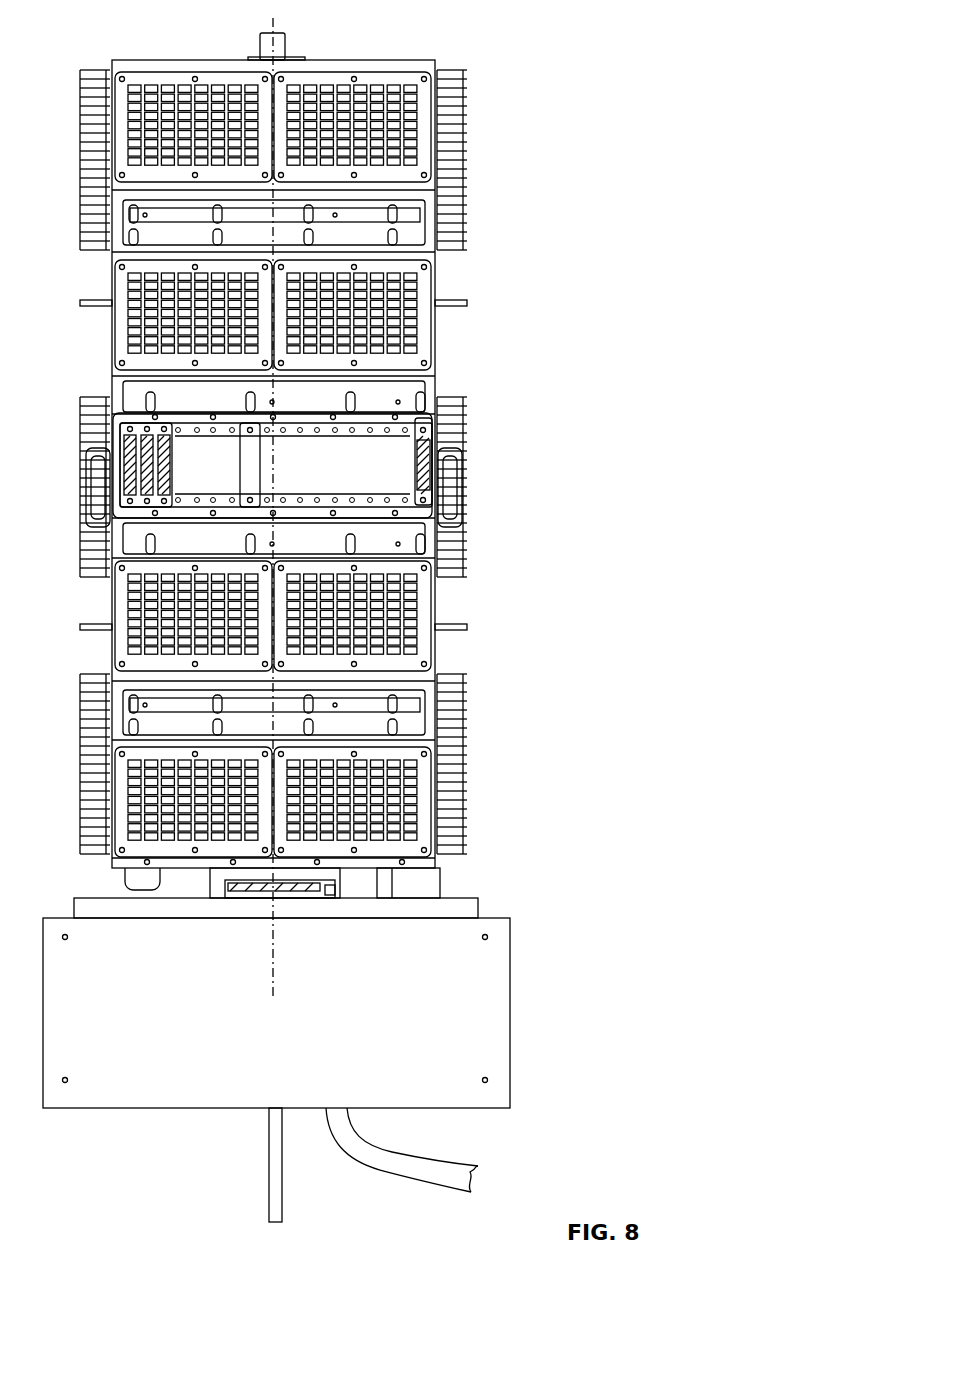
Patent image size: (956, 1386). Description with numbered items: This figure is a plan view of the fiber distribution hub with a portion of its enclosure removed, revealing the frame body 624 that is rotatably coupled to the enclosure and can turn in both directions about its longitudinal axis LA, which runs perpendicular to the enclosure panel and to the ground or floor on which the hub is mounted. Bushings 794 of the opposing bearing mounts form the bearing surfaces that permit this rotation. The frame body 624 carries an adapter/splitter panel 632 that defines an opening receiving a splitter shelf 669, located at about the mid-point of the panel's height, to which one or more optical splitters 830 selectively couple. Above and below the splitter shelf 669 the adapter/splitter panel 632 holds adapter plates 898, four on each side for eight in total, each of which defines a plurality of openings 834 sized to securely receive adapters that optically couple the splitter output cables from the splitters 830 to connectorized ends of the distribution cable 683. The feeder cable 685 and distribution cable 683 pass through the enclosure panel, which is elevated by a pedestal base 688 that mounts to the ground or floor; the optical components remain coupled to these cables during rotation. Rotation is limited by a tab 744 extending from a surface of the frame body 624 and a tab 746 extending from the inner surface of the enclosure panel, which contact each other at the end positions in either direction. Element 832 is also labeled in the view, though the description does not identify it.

The frame body 624 is at (511, 34).
The bushing 794 is at (287, 44).
The opening 834 is at (375, 92).
The adapter plate 898 is at (427, 140).
The connector strip 832 is at (403, 230).
The adapter/splitter panel 632 is at (175, 398).
The splitter shelf 669 is at (437, 418).
The optical splitter 830 is at (120, 445).
The tab 744 is at (128, 876).
The tab 746 is at (438, 886).
The pedestal base 688 is at (450, 1007).
The feeder cable 685 is at (270, 1180).
The distribution cable 683 is at (388, 1162).
The longitudinal axis LA is at (272, 993).